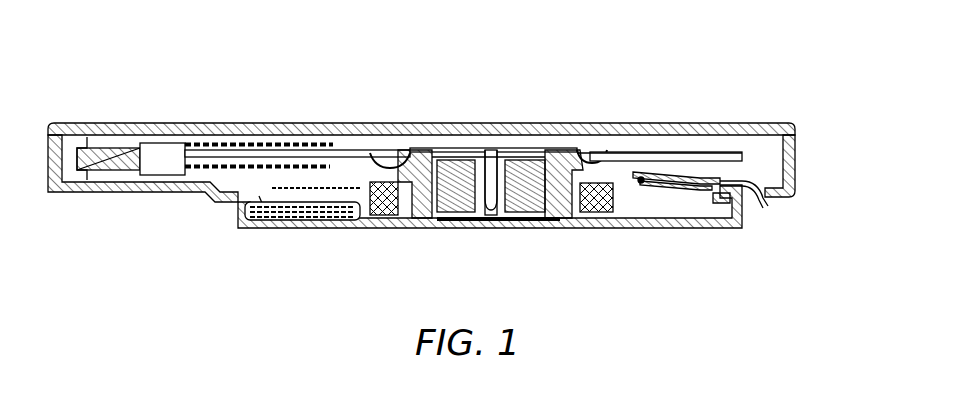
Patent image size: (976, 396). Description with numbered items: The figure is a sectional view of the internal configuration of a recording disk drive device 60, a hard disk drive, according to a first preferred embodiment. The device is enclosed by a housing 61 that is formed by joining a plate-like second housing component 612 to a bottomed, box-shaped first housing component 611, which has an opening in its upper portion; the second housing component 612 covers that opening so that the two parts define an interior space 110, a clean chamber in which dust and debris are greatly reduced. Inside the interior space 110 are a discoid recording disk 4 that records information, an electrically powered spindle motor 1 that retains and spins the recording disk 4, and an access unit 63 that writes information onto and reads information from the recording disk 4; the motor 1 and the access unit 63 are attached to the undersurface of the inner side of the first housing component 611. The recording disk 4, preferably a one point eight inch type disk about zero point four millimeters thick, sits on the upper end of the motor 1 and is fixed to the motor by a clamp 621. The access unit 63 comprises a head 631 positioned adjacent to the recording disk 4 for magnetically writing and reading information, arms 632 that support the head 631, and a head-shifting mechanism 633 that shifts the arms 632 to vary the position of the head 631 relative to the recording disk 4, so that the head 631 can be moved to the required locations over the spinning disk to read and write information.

The recording disk drive device 60 is at (83, 83).
The housing 61 is at (765, 287).
The first housing component 611 is at (655, 228).
The second housing component 612 is at (795, 132).
The access unit 63 is at (150, 283).
The head 631 is at (346, 150).
The arm 632 is at (236, 144).
The head-shifting mechanism 633 is at (160, 160).
The clamp 621 is at (560, 148).
The spindle motor 1 is at (528, 218).
The recording disk 4 is at (660, 152).
The interior space 110 is at (768, 158).